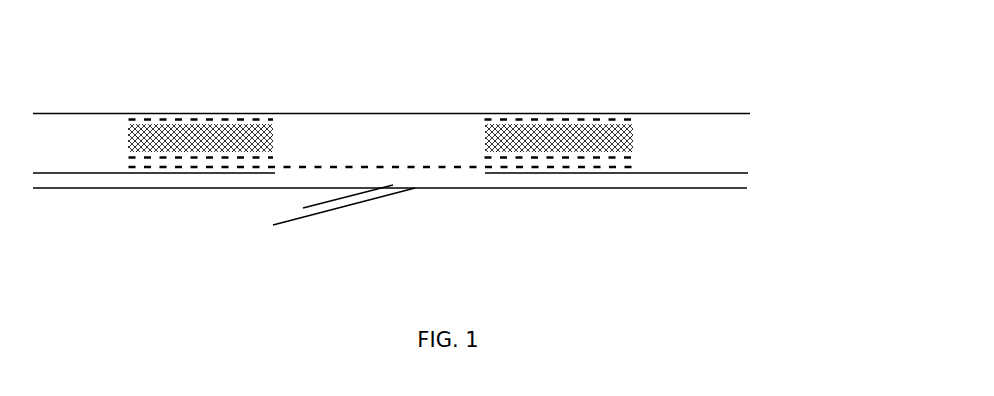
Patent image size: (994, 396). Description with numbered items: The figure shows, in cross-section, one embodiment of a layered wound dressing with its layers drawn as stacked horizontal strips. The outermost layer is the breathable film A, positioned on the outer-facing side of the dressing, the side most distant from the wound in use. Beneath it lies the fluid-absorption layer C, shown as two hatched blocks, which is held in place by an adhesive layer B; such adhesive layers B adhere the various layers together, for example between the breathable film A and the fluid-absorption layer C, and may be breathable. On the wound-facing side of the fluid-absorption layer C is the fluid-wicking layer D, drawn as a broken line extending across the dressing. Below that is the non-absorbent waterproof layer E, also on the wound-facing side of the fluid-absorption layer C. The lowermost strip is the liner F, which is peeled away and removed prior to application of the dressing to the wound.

The breathable film A is at (683, 112).
The adhesive layer B is at (634, 121).
The fluid-absorption layer C is at (618, 142).
The fluid-wicking layer D is at (643, 163).
The non-absorbent waterproof layer E is at (758, 175).
The liner F is at (420, 203).